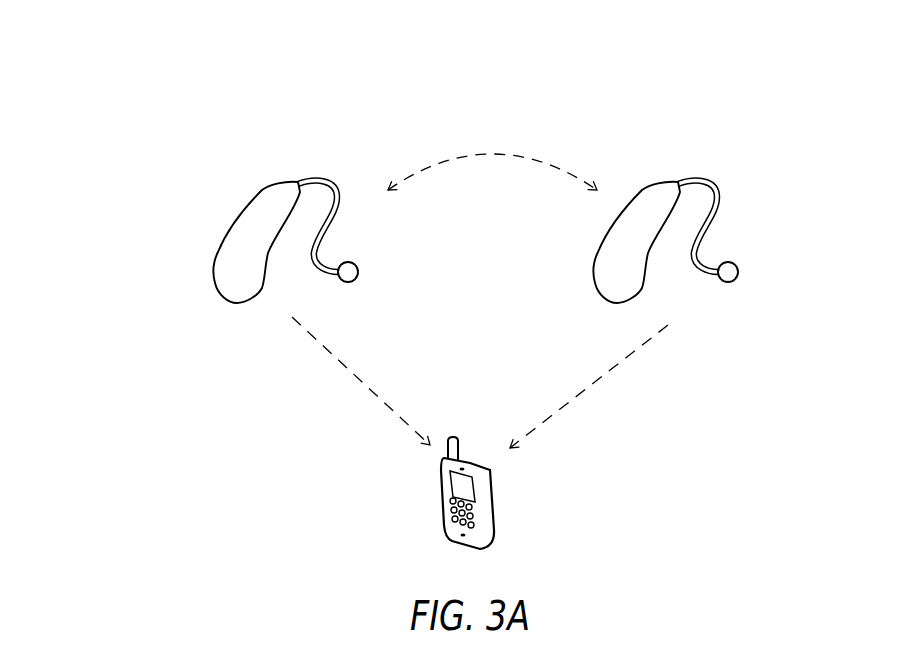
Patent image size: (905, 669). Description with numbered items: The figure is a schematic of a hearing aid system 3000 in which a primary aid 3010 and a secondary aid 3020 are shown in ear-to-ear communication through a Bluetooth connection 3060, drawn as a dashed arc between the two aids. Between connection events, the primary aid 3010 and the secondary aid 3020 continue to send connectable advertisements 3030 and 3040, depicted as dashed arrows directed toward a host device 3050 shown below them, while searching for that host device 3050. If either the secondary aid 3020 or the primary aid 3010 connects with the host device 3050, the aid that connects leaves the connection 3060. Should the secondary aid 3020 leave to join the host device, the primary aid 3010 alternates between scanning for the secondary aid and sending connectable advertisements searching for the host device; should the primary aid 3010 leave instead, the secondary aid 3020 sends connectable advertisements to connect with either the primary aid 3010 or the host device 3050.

The system 3000 is at (137, 52).
The primary aid 3010 is at (266, 187).
The secondary aid 3020 is at (693, 182).
The connectable advertisements 3030 is at (347, 372).
The connectable advertisements 3040 is at (615, 368).
The host device 3050 is at (427, 562).
The Bluetooth connection 3060 is at (468, 133).